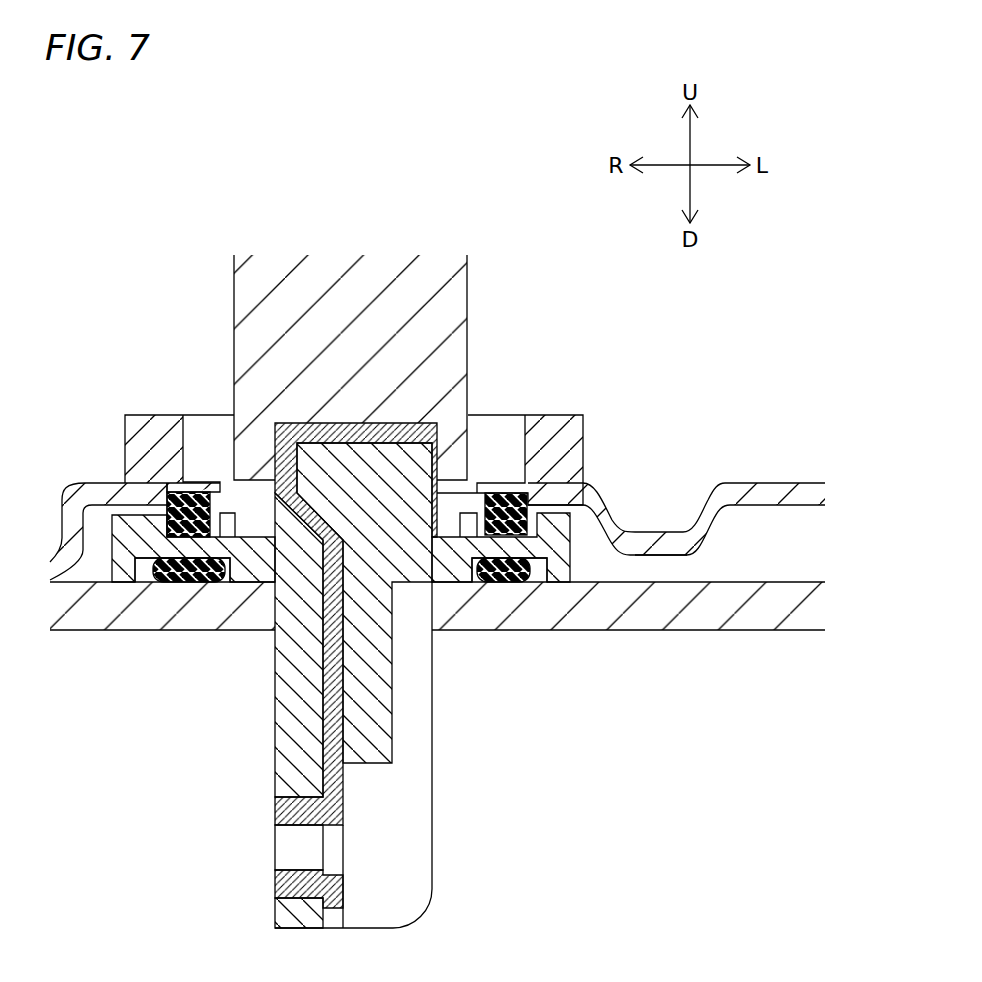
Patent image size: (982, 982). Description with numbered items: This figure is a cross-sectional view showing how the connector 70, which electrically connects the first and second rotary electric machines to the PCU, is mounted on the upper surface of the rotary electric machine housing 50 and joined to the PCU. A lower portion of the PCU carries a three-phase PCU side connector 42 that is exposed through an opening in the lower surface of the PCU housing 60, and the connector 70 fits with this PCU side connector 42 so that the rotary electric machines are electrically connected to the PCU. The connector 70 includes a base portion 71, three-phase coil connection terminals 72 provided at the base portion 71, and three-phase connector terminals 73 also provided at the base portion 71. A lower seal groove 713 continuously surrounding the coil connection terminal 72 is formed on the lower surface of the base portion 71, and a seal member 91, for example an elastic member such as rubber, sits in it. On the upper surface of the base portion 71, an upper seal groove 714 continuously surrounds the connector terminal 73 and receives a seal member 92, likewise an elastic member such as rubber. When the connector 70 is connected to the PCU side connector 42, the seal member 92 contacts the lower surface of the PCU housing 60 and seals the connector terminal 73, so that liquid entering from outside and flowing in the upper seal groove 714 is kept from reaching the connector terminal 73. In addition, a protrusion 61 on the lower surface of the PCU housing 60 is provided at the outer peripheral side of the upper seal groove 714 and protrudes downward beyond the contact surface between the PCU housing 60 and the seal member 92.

The PCU side connector 42 is at (448, 323).
The rotary electric machine housing 50 is at (805, 610).
The PCU housing 60 is at (802, 490).
The protrusion 61 is at (690, 542).
The connector 70 is at (578, 558).
The base portion 71 is at (602, 503).
The coil connection terminal 72 is at (345, 890).
The connector terminal 73 is at (423, 422).
The seal member 91 is at (180, 583).
The seal member 92 is at (175, 492).
The lower seal groove 713 is at (147, 565).
The upper seal groove 714 is at (213, 530).